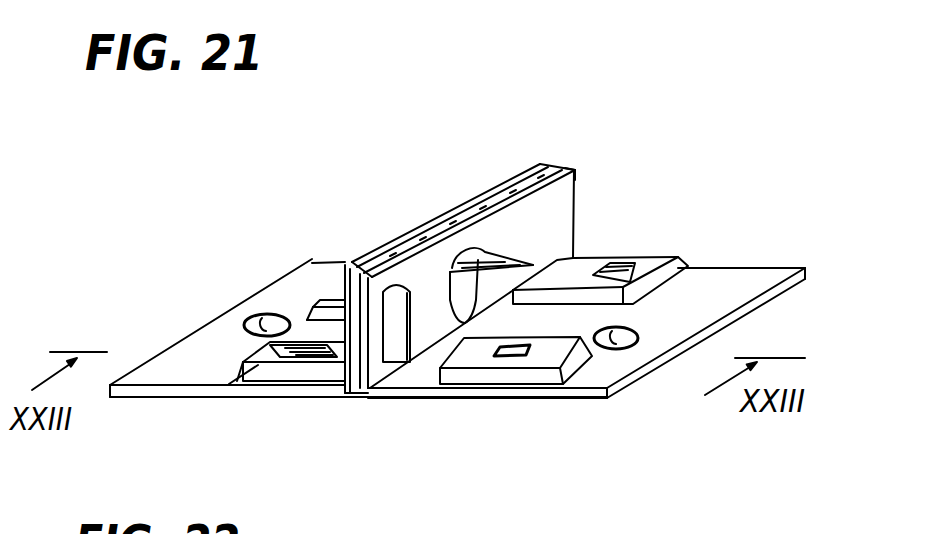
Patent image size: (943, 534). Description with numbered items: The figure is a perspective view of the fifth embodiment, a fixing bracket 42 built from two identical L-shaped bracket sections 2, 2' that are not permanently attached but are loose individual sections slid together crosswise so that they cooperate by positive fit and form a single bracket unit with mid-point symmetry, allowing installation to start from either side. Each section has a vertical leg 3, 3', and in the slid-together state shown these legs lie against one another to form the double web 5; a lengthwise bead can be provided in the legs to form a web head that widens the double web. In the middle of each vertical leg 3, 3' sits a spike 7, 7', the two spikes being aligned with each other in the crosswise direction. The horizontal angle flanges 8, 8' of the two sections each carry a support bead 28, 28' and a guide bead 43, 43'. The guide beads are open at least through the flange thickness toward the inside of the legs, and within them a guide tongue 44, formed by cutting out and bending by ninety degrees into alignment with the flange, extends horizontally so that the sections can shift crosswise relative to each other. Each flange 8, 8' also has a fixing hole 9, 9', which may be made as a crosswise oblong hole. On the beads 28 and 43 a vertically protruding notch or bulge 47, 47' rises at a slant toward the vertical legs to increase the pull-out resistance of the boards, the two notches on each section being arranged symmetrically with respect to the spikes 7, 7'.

The bracket section 2 is at (227, 310).
The bracket section 2' is at (600, 288).
The vertical leg 3 is at (440, 247).
The vertical leg 3' is at (612, 208).
The double web 5 is at (583, 152).
The spike 7 is at (463, 214).
The spike 7' is at (491, 220).
The angle flange 8 is at (358, 418).
The angle flange 8' is at (706, 374).
The fixing hole 9 is at (262, 280).
The fixing hole 9' is at (647, 373).
The support bead 28 is at (307, 246).
The support bead 28' is at (519, 404).
The fixing bracket 42 is at (444, 432).
The guide bead 43 is at (283, 406).
The guide bead 43' is at (644, 254).
The guide tongue 44 is at (388, 364).
The notch 47 is at (322, 412).
The notch 47' is at (653, 231).